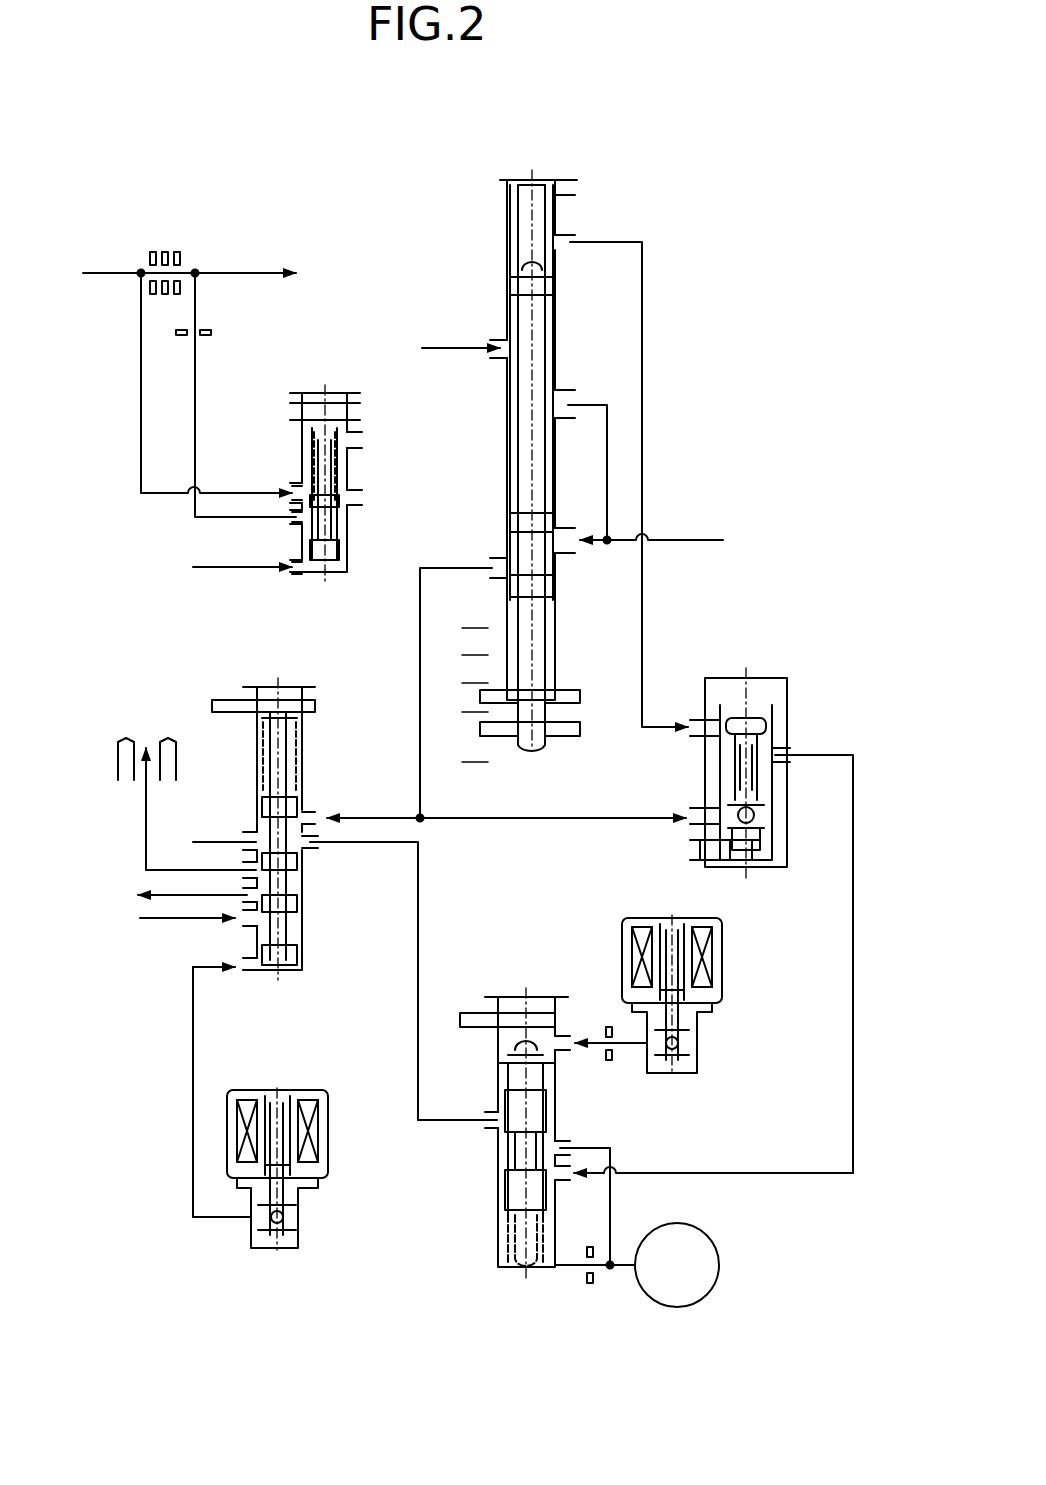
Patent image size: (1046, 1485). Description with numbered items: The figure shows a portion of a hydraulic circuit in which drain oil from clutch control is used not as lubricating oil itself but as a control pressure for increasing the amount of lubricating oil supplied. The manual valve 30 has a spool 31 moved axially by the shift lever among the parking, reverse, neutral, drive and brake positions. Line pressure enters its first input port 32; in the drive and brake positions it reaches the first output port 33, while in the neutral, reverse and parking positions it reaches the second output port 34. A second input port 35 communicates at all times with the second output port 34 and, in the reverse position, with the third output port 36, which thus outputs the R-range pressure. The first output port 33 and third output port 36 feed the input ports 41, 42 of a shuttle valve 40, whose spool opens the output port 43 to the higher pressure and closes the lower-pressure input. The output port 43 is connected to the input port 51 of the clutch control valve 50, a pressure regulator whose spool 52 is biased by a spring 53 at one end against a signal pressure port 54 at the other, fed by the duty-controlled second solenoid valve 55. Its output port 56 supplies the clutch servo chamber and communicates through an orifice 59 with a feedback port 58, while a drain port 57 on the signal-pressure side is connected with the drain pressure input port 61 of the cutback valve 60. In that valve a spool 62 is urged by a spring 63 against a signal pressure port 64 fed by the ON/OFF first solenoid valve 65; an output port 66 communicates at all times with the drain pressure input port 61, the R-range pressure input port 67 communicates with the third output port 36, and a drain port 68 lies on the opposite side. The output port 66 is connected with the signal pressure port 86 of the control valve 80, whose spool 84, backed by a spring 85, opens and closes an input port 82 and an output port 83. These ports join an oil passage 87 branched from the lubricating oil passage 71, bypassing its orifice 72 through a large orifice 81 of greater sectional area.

The manual valve 30 is at (482, 214).
The spool 31 is at (540, 322).
The first input port 32 is at (500, 340).
The first output port 33 is at (565, 236).
The second output port 34 is at (562, 396).
The second input port 35 is at (565, 546).
The third output port 36 is at (498, 560).
The shuttle valve 40 is at (798, 678).
The input port 41 is at (697, 716).
The input port 42 is at (700, 826).
The output port 43 is at (788, 756).
The C1 control valve 50 is at (506, 978).
The input port 51 is at (558, 1180).
The spool 52 is at (516, 1192).
The spring 53 is at (500, 1262).
The signal pressure port 54 is at (566, 1036).
The second solenoid valve 55 is at (724, 966).
The output port 56 is at (562, 1146).
The drain port 57 is at (496, 1126).
The feedback port 58 is at (553, 1272).
The orifice 59 is at (592, 1282).
The cutback valve 60 is at (338, 702).
The drain pressure input port 61 is at (306, 850).
The spool 62 is at (296, 782).
The spring 63 is at (262, 736).
The signal pressure port 64 is at (250, 974).
The first solenoid valve 65 is at (328, 1130).
The output port 66 is at (252, 838).
The R-range pressure input port 67 is at (308, 812).
The drain port 68 is at (248, 862).
The lubricating oil passage 71 is at (198, 268).
The orifice 72 is at (152, 252).
The control valve 80 is at (326, 348).
The large orifice 81 is at (206, 337).
The input port 82 is at (298, 484).
The output port 83 is at (296, 524).
The spool 84 is at (352, 497).
The spring 85 is at (352, 442).
The signal pressure port 86 is at (298, 576).
The oil passage 87 is at (196, 404).